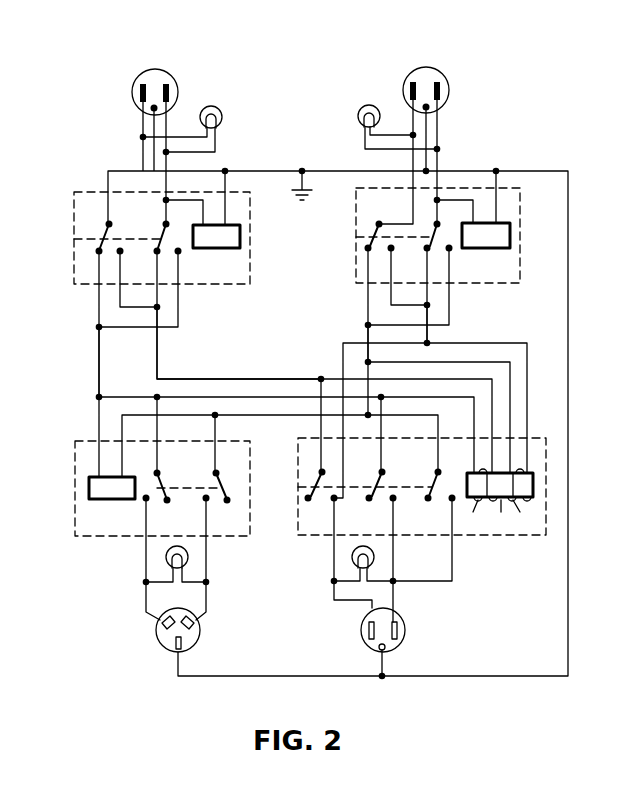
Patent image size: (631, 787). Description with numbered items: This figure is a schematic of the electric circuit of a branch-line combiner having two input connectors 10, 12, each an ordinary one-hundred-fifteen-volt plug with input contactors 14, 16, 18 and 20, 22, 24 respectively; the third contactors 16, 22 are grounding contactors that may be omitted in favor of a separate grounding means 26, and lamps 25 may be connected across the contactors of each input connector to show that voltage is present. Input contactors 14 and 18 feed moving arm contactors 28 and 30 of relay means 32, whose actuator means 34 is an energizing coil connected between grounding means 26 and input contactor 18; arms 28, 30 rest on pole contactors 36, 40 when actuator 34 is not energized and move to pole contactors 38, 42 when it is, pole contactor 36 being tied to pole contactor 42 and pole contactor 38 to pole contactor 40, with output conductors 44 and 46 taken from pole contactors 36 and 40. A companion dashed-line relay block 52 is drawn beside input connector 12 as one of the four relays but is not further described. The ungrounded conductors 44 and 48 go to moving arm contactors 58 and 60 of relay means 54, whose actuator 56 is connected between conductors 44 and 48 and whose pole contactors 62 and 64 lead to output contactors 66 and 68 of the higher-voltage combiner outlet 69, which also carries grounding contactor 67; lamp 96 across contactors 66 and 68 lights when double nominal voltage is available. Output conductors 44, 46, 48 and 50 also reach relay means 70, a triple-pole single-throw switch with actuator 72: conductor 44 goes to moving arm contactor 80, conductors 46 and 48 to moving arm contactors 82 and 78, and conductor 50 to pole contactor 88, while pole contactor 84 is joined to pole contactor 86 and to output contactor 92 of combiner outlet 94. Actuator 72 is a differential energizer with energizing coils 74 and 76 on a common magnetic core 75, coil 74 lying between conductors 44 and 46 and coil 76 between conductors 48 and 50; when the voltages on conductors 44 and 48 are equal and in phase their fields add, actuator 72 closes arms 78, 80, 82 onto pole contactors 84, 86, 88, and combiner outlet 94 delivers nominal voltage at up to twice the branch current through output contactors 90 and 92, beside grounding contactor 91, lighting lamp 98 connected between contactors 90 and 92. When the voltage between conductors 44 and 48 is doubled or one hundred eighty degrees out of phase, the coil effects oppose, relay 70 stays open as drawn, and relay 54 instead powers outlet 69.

The input connector 10 is at (156, 61).
The input connector 12 is at (426, 60).
The input contactor 14 is at (140, 86).
The input contactor 16 is at (151, 111).
The input contactor 18 is at (168, 87).
The input contactor 20 is at (411, 84).
The input contactor 22 is at (429, 109).
The input contactor 24 is at (440, 86).
The lamps 25 is at (222, 117).
The grounding means 26 is at (312, 192).
The moving arm contactor 28 is at (95, 232).
The moving arm contactor 30 is at (153, 231).
The relay means 32 is at (69, 183).
The actuator means 34 is at (240, 238).
The pole contactor 36 is at (98, 253).
The pole contactor 38 is at (118, 255).
The pole contactor 40 is at (156, 254).
The pole contactor 42 is at (180, 253).
The output conductor 44 is at (98, 363).
The output conductor 46 is at (158, 363).
The output conductor 48 is at (367, 338).
The output conductor 50 is at (430, 338).
The second relay 52 is at (530, 196).
The relay means 54 is at (71, 434).
The actuator 56 is at (89, 487).
The moving arm contactor 58 is at (161, 484).
The moving arm contactor 60 is at (219, 484).
The pole contactor 62 is at (145, 500).
The pole contactor 64 is at (205, 500).
The output contactor 66 is at (158, 629).
The output grounding contactor 67 is at (181, 645).
The output contactor 68 is at (198, 629).
The combiner outlet 69 is at (160, 656).
The relay means 70 is at (548, 428).
The actuator 72 is at (543, 489).
The energizing coil 74 is at (471, 516).
The magnetic core 75 is at (498, 516).
The energizing coil 76 is at (526, 516).
The moving arm contactor 78 is at (434, 482).
The moving arm contactor 80 is at (377, 482).
The moving arm contactor 82 is at (318, 480).
The pole contactor 84 is at (450, 501).
The pole contactor 86 is at (395, 501).
The pole contactor 88 is at (336, 501).
The output contactor 90 is at (366, 630).
The output grounding contactor 91 is at (386, 650).
The output contactor 92 is at (400, 630).
The combiner outlet 94 is at (362, 656).
The lamp 96 is at (166, 558).
The lamp 98 is at (352, 558).